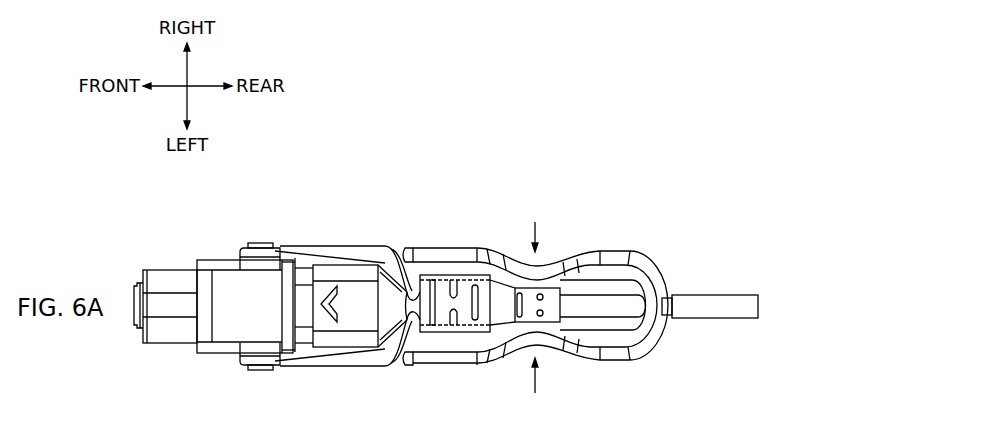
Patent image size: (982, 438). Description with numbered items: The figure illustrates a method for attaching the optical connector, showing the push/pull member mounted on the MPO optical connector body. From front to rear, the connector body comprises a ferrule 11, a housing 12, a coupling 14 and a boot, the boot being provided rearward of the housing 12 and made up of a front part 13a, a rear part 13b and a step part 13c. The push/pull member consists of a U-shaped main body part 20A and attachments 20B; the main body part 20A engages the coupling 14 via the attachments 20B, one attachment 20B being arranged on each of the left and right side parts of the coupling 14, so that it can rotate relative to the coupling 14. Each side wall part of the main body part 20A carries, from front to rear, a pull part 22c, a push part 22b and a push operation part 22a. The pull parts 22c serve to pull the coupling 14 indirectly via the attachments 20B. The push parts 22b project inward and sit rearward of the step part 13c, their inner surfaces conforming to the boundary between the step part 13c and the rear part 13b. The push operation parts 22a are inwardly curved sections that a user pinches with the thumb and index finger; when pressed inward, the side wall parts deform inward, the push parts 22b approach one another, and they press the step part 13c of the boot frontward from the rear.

The ferrule 11 is at (143, 282).
The housing 12 is at (172, 268).
The coupling 14 is at (210, 260).
The main body part 20A is at (450, 226).
The attachment 20B is at (243, 353).
The front part 13a is at (343, 253).
The rear part 13b is at (485, 278).
The step part 13c is at (393, 253).
The push operation part 22a is at (540, 263).
The push part 22b is at (407, 248).
The pull part 22c is at (287, 245).